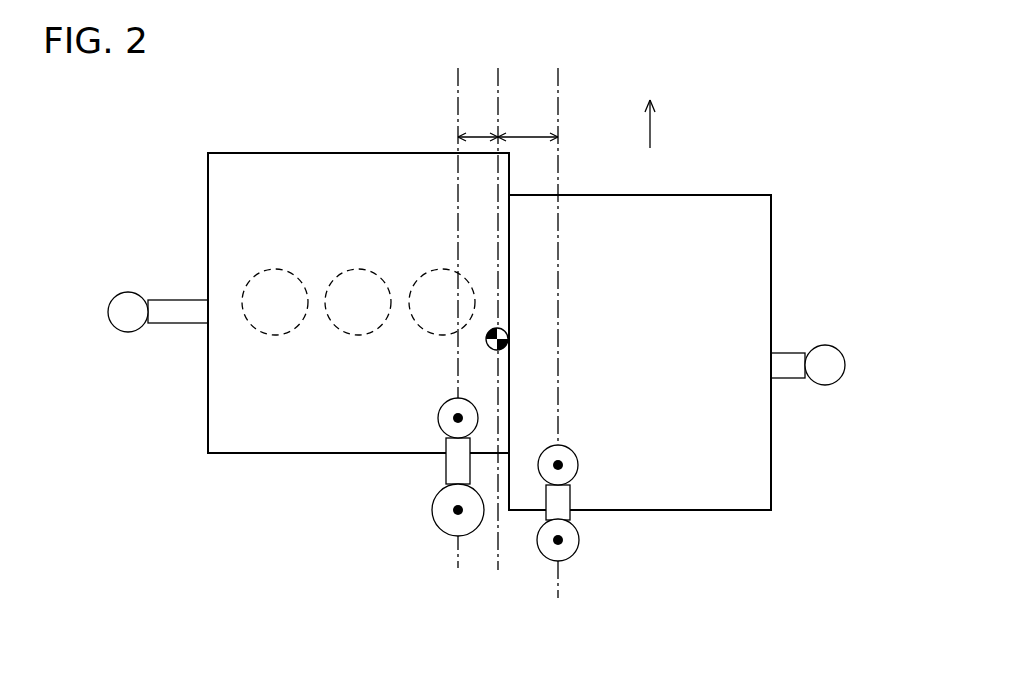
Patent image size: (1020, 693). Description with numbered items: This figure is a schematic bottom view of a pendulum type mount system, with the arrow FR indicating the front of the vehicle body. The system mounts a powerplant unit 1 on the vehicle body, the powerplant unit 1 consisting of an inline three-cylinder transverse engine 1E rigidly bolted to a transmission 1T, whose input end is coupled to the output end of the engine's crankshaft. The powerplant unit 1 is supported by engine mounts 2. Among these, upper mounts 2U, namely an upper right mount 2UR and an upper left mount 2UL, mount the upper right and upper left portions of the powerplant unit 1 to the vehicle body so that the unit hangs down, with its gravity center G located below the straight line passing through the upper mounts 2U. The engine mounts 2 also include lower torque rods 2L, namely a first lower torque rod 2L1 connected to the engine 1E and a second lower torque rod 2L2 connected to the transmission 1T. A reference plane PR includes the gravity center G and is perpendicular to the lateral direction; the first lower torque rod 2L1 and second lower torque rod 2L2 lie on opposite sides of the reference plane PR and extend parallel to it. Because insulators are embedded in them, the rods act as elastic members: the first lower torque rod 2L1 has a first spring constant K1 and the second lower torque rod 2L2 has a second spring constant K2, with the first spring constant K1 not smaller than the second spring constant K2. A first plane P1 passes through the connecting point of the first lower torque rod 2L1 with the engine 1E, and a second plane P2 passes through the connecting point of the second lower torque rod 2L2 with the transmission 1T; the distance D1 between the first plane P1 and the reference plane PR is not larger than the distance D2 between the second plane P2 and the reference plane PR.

The powerplant unit 1 is at (544, 295).
The engine 1E is at (283, 175).
The transmission 1T is at (750, 225).
The engine mounts 2 is at (483, 394).
The upper mounts 2U is at (483, 296).
The upper right mount 2UR is at (130, 290).
The upper left mount 2UL is at (825, 345).
The lower torque rods 2L is at (535, 489).
The first lower torque rod 2L1 is at (402, 477).
The second lower torque rod 2L2 is at (644, 513).
The first spring constant K1 is at (437, 418).
The second spring constant K2 is at (576, 468).
The gravity center G is at (511, 338).
The first plane P1 is at (458, 95).
The second plane P2 is at (558, 92).
The reference plane PR is at (498, 558).
The distance D1 is at (478, 124).
The distance D2 is at (528, 124).
The arrow FR is at (668, 124).